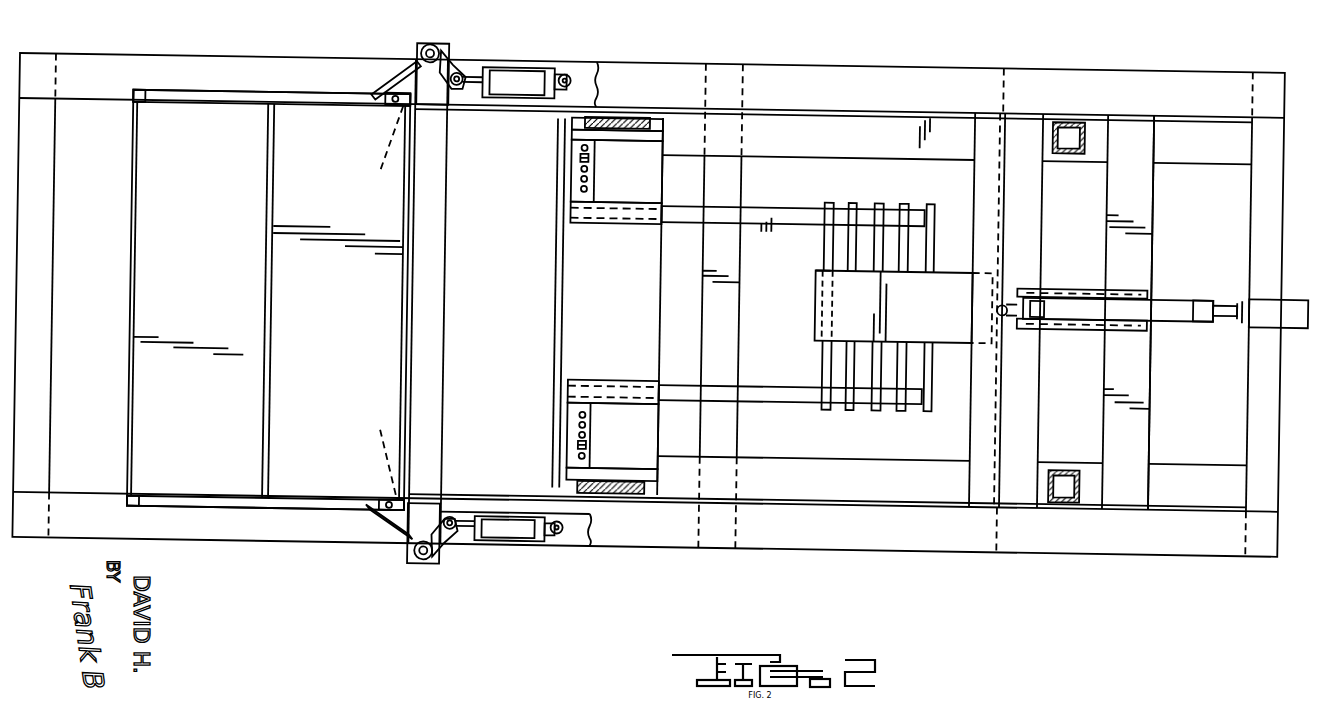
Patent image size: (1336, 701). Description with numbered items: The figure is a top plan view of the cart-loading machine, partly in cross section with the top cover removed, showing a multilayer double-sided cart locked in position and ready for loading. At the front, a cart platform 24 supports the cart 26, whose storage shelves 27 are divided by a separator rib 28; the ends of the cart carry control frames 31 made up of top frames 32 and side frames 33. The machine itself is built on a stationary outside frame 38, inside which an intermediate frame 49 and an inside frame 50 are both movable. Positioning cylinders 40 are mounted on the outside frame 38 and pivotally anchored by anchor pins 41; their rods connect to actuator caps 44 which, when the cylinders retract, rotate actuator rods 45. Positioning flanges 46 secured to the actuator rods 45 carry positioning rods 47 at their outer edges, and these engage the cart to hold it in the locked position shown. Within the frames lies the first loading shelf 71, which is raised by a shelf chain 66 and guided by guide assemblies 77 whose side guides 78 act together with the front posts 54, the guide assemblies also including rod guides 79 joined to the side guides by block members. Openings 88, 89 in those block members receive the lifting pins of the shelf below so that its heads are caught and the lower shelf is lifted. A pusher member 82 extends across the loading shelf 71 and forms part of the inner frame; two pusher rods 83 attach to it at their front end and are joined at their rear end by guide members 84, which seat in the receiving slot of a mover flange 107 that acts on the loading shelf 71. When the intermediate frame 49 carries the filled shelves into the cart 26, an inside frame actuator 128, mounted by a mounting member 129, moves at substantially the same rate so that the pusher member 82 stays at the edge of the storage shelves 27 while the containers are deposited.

The cart platform 24 is at (299, 526).
The cart 26 is at (122, 398).
The shelves 27 is at (186, 280).
The separator rib 28 is at (276, 311).
The control frames 31 is at (150, 508).
The top frames 32 is at (222, 91).
The side frames 33 is at (377, 302).
The outside frame 38 is at (1150, 543).
The positioning cylinders 40 is at (512, 70).
The anchor pins 41 is at (569, 66).
The actuator caps 44 is at (443, 41).
The actuator rods 45 is at (422, 46).
The positioning flanges 46 is at (392, 78).
The positioning rods 47 is at (388, 100).
The intermediate frame 49 is at (1163, 421).
The inside frame 50 is at (866, 186).
The front posts 54 is at (624, 108).
The shelf chain 66 is at (591, 150).
The first loading shelf 71 is at (494, 425).
The guide assemblies 77 is at (603, 442).
The side guides 78 is at (654, 132).
The rod guides 79 is at (619, 372).
The pusher members 82 is at (559, 331).
The pusher rods 83 is at (760, 203).
The guide members 84 is at (826, 237).
The opening 88 is at (583, 140).
The opening 89 is at (584, 448).
The mover flange 107 is at (958, 308).
The inside frame actuator 128 is at (1178, 294).
The mounting member 129 is at (1060, 275).